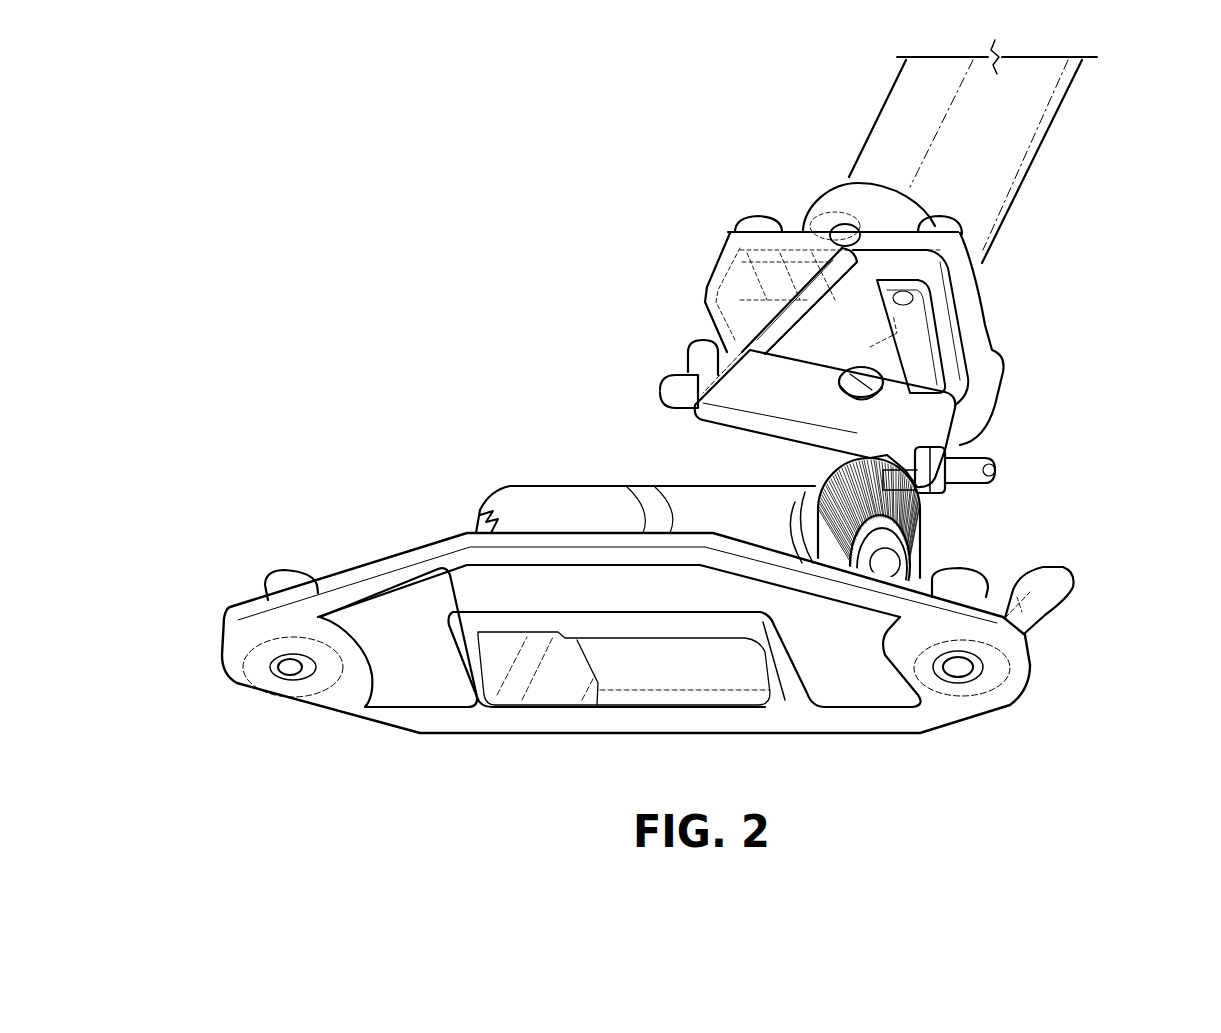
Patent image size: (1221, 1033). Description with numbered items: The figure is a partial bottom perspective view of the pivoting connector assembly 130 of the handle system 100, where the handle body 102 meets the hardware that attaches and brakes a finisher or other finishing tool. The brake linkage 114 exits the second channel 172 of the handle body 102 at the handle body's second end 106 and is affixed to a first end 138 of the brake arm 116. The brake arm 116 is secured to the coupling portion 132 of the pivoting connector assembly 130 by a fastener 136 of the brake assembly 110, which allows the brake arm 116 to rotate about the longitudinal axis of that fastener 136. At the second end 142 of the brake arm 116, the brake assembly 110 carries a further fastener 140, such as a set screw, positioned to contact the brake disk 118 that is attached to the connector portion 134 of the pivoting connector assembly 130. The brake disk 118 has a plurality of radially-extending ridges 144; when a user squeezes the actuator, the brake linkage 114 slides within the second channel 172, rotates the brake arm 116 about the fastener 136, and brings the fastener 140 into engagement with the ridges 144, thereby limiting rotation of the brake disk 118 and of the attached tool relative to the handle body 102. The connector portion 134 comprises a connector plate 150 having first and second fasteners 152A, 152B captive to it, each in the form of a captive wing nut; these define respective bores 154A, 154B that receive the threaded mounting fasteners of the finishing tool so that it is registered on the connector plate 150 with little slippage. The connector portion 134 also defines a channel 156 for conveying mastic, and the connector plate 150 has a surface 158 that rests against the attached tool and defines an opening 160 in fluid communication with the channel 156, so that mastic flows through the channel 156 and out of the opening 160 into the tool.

The handle system 100 is at (484, 207).
The handle body 102 is at (1013, 133).
The second end 106 is at (856, 277).
The second channel 172 is at (840, 233).
The brake assembly 110 is at (847, 463).
The brake linkage 114 is at (797, 320).
The brake arm 116 is at (750, 383).
The brake disk 118 is at (817, 540).
The coupling portion 132 is at (873, 373).
The fastener 136 is at (943, 310).
The first end 138 is at (703, 393).
The second end 142 is at (943, 427).
The fastener 140 is at (997, 462).
The radially-extending ridges 144 is at (912, 532).
The pivoting connector assembly 130 is at (445, 463).
The connector portion 134 is at (847, 823).
The connector plate 150 is at (410, 645).
The first fastener 152A is at (290, 582).
The second fastener 152B is at (1043, 593).
The bore 154A is at (295, 673).
The bore 154B is at (967, 667).
The channel 156 is at (563, 683).
The surface 158 is at (487, 715).
The opening 160 is at (473, 640).